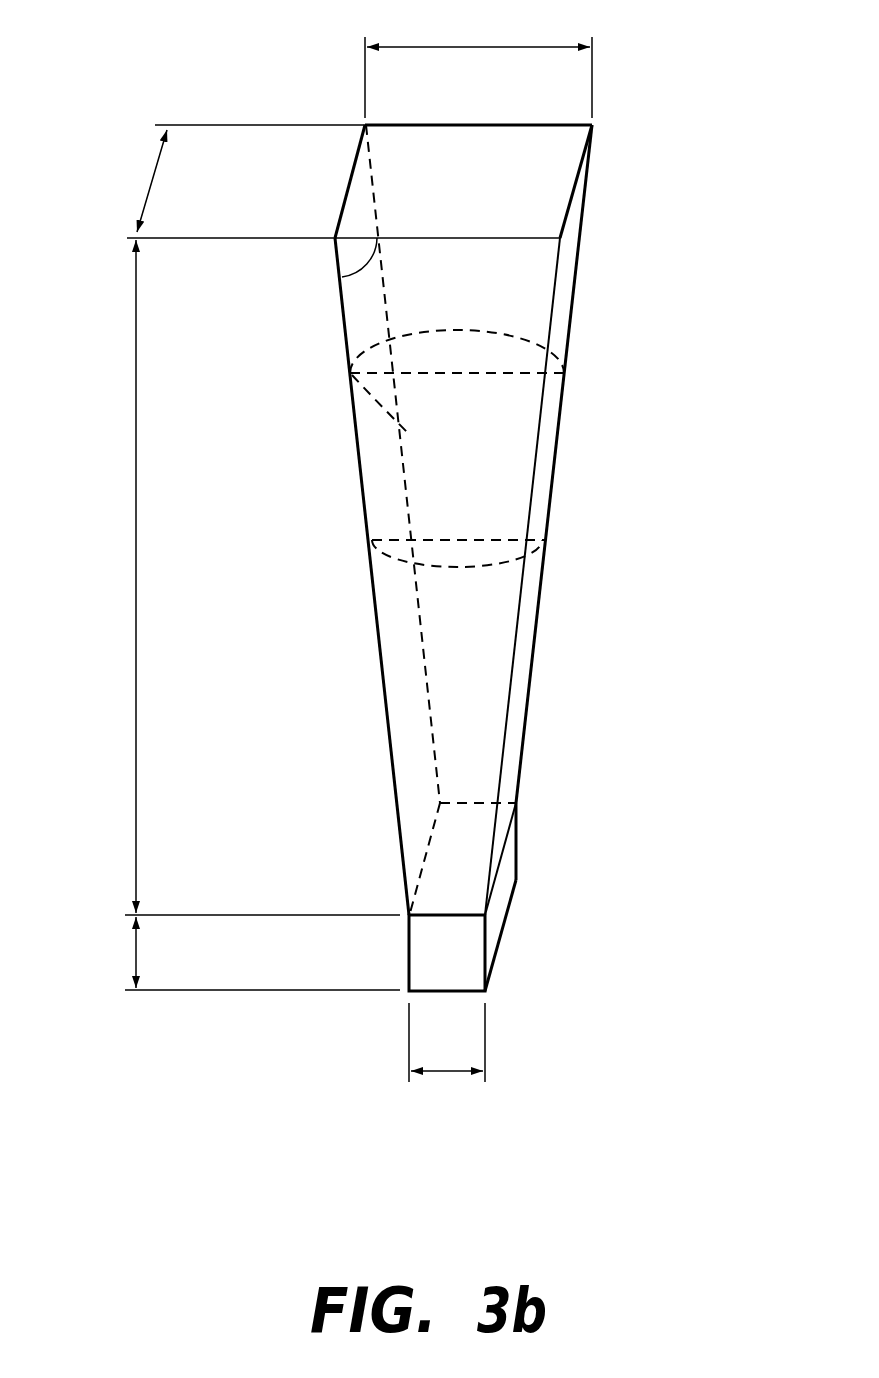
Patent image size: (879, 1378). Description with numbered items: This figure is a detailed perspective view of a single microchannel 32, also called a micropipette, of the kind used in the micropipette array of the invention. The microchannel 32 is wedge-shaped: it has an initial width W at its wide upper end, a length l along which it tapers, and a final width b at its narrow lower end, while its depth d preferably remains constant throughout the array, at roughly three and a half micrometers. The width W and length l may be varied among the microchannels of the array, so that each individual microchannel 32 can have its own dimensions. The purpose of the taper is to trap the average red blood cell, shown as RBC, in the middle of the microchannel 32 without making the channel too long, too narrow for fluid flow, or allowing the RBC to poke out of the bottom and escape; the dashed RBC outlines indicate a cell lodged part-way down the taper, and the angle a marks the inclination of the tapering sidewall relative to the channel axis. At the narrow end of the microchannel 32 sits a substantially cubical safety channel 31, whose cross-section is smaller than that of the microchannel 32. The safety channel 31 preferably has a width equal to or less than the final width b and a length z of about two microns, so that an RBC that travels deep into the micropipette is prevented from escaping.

The safety channel 31 is at (568, 926).
The microchannel 32 is at (630, 480).
The width W is at (478, 23).
The depth d is at (142, 181).
The length l is at (118, 576).
The length of safety channel z is at (118, 952).
The final width b is at (447, 1102).
The taper angle a is at (359, 275).
The red blood cell RBC is at (457, 448).